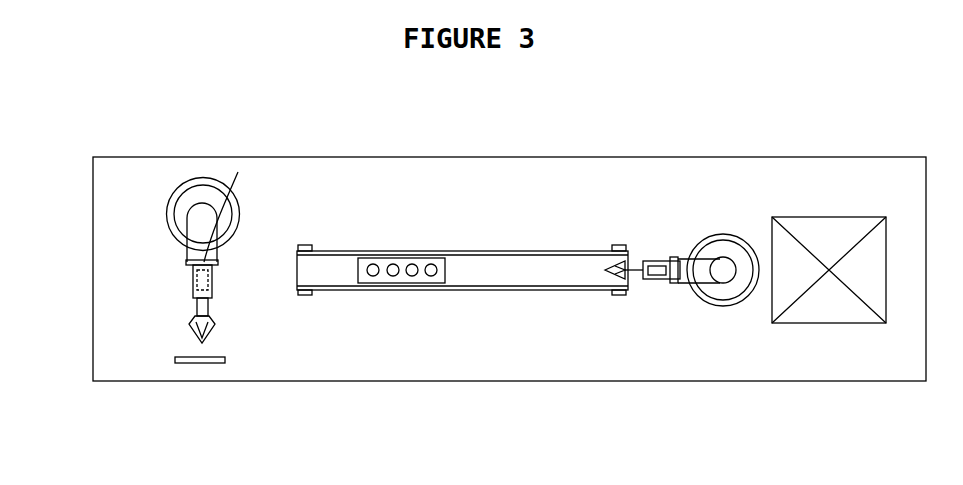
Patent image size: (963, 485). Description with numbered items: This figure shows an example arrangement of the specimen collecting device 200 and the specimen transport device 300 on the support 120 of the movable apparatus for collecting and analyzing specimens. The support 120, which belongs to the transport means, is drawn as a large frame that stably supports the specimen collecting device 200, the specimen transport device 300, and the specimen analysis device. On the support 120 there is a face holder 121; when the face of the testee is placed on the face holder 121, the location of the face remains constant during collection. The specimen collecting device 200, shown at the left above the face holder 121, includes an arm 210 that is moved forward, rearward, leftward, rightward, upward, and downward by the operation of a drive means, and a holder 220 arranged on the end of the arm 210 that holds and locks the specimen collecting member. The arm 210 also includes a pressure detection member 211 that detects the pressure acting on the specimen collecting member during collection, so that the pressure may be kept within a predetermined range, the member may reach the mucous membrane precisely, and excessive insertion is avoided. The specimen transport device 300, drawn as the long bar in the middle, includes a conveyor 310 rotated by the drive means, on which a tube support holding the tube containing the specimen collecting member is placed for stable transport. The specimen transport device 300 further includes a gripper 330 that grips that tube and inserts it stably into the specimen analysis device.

The support 120 is at (137, 175).
The face holder 121 is at (227, 363).
The specimen collecting device 200 is at (136, 273).
The arm 210 is at (188, 258).
The pressure detection member 211 is at (238, 172).
The holder 220 is at (190, 326).
The specimen transport device 300 is at (462, 270).
The conveyor 310 is at (487, 250).
The gripper 330 is at (418, 283).